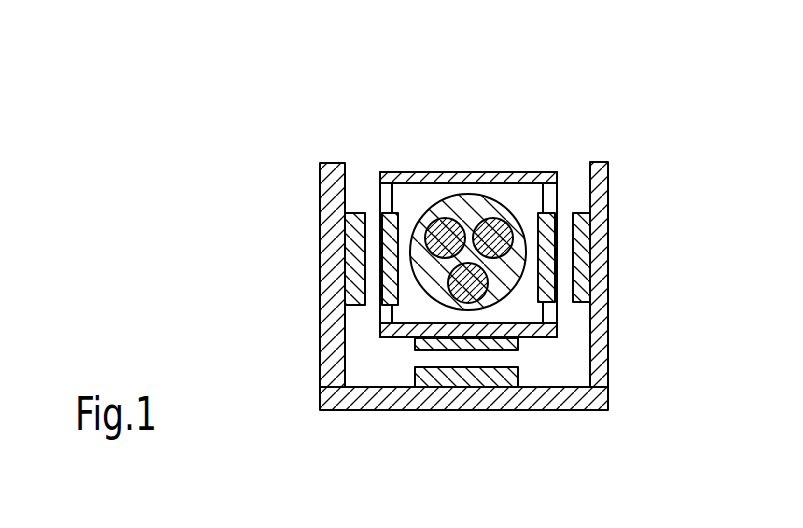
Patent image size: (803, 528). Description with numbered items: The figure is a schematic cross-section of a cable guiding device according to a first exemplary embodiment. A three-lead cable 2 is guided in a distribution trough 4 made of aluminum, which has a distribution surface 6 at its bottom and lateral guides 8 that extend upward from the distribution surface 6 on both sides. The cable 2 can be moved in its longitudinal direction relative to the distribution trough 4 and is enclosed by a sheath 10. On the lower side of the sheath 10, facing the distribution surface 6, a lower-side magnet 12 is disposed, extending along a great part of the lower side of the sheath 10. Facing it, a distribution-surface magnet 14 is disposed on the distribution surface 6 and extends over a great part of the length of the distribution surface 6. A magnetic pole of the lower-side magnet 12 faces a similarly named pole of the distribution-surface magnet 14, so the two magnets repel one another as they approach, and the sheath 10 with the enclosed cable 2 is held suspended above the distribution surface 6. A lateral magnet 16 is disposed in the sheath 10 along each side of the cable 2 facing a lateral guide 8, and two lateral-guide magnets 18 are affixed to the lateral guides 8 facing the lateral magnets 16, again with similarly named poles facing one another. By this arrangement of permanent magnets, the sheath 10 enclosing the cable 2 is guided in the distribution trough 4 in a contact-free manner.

The three-lead cable 2 is at (480, 215).
The distribution trough 4 is at (389, 398).
The distribution surface 6 is at (377, 385).
The lateral guides 8 is at (335, 247).
The sheath 10 is at (457, 172).
The lower-side magnet 12 is at (520, 343).
The distribution-surface magnet 14 is at (522, 383).
The lateral magnet 16 is at (378, 213).
The lateral-guide magnets 18 is at (346, 290).